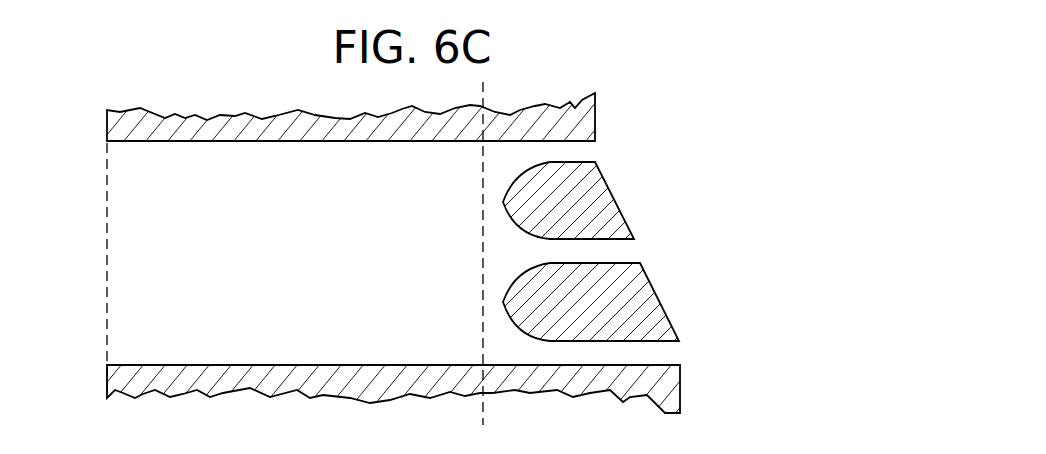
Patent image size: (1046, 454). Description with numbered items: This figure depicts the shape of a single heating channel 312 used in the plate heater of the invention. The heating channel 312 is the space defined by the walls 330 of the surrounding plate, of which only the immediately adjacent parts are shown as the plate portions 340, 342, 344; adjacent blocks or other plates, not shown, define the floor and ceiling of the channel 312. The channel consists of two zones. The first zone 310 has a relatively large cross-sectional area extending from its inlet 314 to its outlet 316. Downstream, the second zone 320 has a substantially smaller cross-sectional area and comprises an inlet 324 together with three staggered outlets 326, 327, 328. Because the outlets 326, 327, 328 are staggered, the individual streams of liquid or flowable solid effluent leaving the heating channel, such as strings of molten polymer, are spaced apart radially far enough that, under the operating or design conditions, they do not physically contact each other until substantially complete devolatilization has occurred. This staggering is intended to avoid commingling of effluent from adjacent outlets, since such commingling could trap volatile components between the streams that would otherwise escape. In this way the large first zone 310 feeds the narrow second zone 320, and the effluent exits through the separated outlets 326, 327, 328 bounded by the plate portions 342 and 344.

The first zone 310 is at (298, 243).
The heating channel 312 is at (432, 163).
The inlet 314 is at (105, 282).
The outlet 316 is at (482, 282).
The second zone 320 is at (597, 342).
The inlet 324 is at (485, 185).
The outlet 326 is at (595, 153).
The outlet 327 is at (628, 253).
The outlet 328 is at (667, 353).
The walls 330 is at (185, 145).
The plate 340 is at (302, 94).
The plate 342 is at (533, 210).
The plate 344 is at (543, 310).